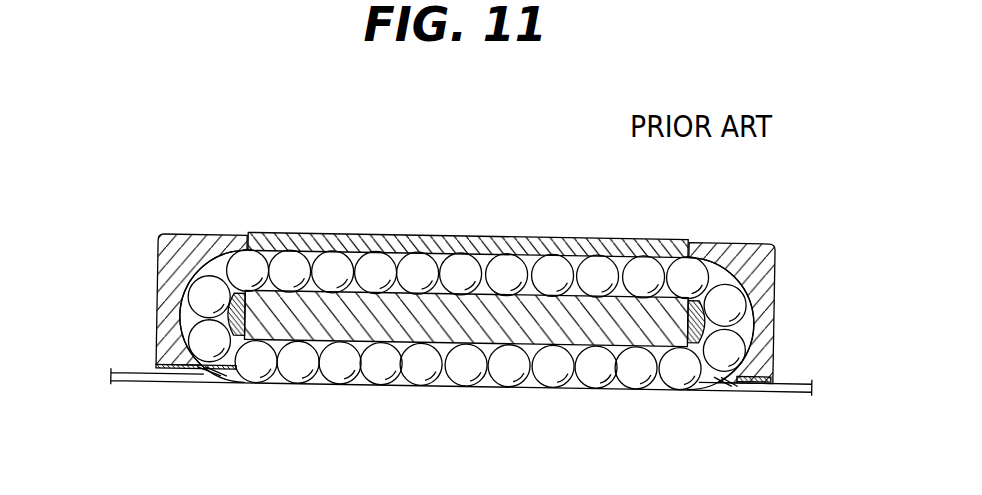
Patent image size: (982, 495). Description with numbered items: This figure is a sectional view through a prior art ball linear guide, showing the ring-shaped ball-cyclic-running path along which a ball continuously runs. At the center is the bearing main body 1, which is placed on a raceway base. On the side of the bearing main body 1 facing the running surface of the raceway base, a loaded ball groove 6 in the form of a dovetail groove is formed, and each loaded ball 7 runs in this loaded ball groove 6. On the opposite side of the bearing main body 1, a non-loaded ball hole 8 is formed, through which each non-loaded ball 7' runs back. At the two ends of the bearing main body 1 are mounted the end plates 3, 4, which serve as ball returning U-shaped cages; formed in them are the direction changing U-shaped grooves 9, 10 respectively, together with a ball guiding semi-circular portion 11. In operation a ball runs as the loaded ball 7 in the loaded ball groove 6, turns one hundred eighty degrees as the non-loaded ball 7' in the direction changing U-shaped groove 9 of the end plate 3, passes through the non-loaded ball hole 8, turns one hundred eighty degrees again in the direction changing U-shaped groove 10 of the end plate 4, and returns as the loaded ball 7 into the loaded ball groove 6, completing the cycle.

The bearing main body 1 is at (392, 238).
The end plate 3 is at (756, 245).
The end plate 4 is at (180, 233).
The loaded ball groove 6 is at (528, 388).
The loaded ball 7 is at (468, 392).
The non-loaded ball 7' is at (467, 236).
The non-loaded ball hole 8 is at (529, 257).
The direction changing U-shaped groove 9 is at (773, 327).
The direction changing U-shaped groove 10 is at (158, 289).
The ball guiding semi-circular portion 11 is at (240, 377).